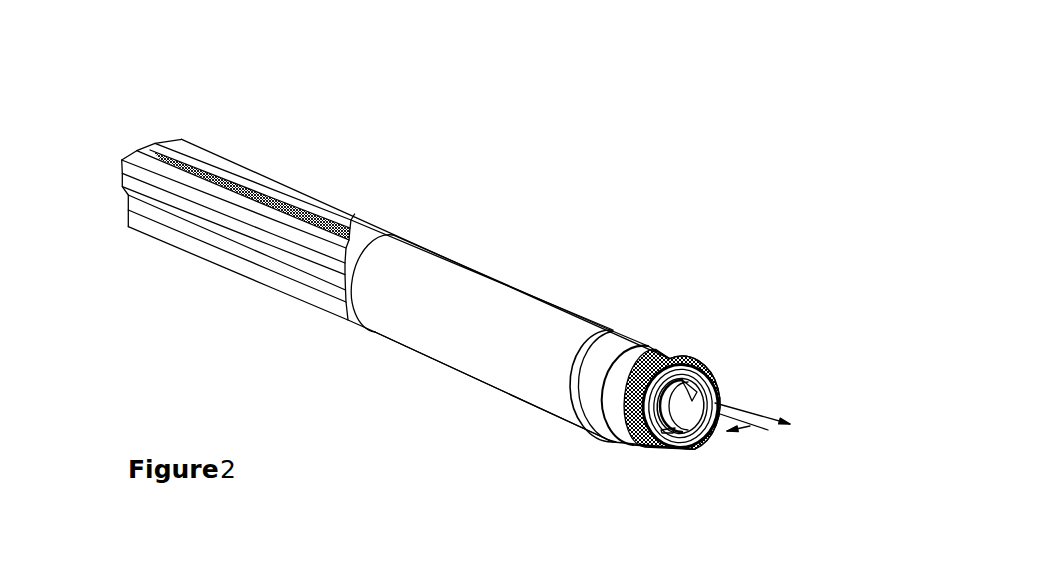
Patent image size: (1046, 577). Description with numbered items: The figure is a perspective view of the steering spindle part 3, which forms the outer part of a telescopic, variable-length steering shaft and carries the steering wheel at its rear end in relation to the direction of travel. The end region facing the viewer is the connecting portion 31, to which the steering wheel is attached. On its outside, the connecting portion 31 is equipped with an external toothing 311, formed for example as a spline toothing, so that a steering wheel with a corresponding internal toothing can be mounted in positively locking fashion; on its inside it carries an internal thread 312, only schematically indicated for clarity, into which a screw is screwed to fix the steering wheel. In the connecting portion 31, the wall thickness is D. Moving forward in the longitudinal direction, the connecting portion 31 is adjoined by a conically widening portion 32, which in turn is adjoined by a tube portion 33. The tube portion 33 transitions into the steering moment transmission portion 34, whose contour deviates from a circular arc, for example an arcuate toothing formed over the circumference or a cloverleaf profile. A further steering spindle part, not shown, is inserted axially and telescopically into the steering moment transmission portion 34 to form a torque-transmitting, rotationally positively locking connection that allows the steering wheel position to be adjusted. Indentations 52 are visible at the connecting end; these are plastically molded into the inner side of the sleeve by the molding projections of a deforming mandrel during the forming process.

The steering spindle part 3 is at (497, 133).
The steering moment transmission portion 34 is at (257, 186).
The tube portion 33 is at (491, 320).
The conically widening portion 32 is at (648, 342).
The connecting portion 31 is at (698, 364).
The external toothing 311 is at (613, 432).
The internal thread 312 is at (635, 443).
The indentations 52 is at (717, 392).
The wall thickness D is at (762, 427).